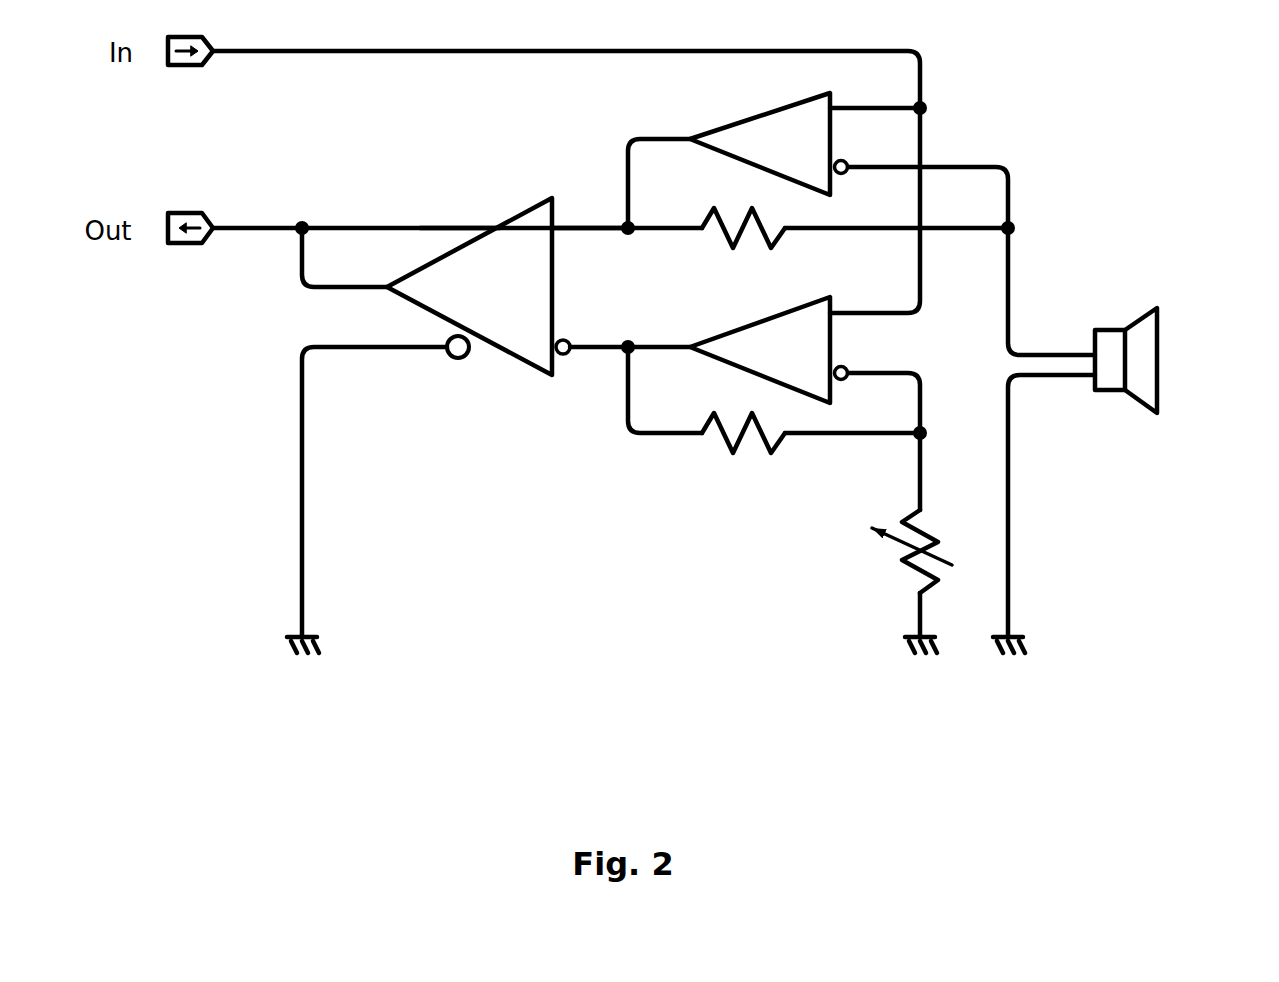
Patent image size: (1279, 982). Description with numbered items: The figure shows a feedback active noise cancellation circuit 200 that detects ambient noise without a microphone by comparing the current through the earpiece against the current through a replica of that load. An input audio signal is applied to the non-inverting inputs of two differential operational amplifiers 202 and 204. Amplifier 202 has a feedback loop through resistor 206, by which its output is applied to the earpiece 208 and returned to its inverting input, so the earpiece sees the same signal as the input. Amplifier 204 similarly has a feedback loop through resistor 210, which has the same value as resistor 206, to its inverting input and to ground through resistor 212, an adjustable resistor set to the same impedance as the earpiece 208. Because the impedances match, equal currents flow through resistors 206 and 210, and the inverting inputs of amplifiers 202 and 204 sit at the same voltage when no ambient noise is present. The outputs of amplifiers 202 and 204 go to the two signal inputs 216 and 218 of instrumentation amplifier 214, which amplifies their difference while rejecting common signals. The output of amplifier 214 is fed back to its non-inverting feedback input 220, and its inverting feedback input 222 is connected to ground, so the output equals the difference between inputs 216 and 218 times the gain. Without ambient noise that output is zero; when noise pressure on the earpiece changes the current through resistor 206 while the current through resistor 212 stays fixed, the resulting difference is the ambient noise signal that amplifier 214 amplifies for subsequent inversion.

The feedback active noise cancellation circuit 200 is at (602, 601).
The amplifier 202 is at (769, 144).
The amplifier 204 is at (769, 350).
The resistor 206 is at (708, 243).
The earpiece 208 is at (1162, 355).
The resistor 210 is at (710, 454).
The resistor 212 is at (866, 562).
The instrumentation amplifier 214 is at (469, 286).
The input 216 is at (569, 216).
The input 218 is at (564, 370).
The non-inverting feedback input 220 is at (457, 216).
The inverting feedback input 222 is at (456, 372).